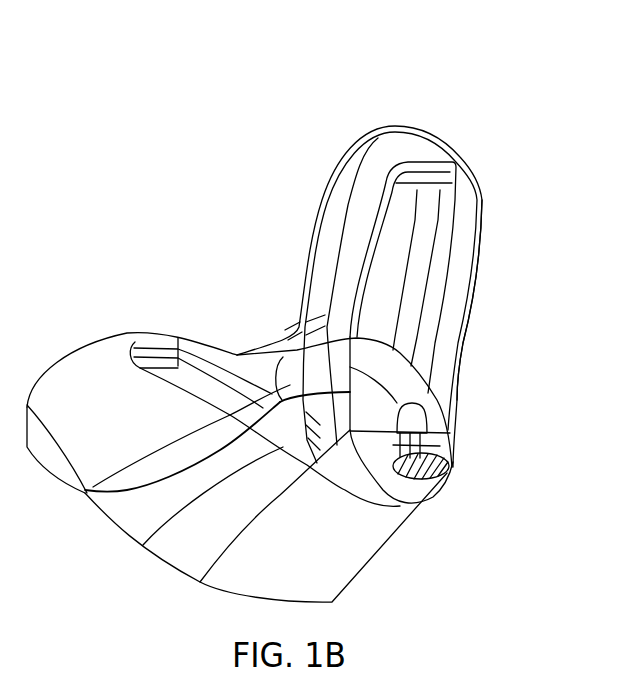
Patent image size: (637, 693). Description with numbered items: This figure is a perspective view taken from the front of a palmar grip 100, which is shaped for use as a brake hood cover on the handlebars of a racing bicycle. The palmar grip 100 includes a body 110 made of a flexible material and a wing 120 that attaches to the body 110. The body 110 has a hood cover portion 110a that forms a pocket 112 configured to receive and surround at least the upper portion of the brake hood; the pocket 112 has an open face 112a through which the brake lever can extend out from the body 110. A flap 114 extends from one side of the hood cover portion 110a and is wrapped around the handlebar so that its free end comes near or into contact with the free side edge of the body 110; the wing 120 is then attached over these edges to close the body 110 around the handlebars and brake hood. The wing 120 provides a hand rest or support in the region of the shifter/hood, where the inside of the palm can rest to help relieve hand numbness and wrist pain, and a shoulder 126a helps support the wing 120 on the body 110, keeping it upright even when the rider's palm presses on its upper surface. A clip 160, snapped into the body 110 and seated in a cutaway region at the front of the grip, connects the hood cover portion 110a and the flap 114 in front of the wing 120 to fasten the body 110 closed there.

The palmar grip 100 is at (210, 250).
The body 110 is at (374, 557).
The hood cover portion 110a is at (327, 232).
The pocket 112 is at (395, 197).
The open face 112a is at (472, 347).
The flap 114 is at (311, 565).
The wing 120 is at (70, 358).
The shoulder 126a is at (133, 475).
The clip 160 is at (352, 368).